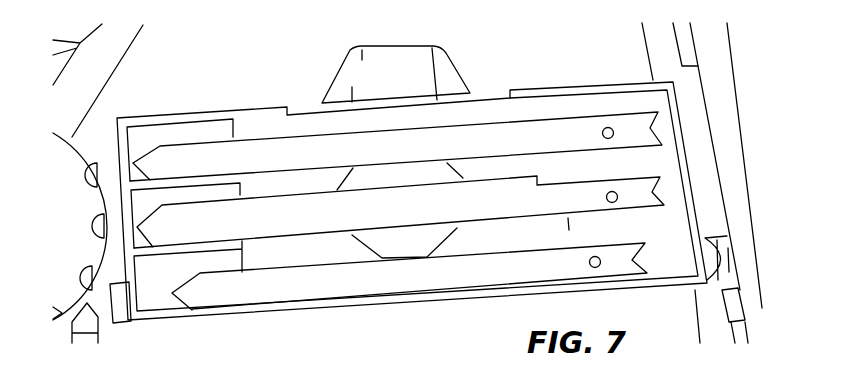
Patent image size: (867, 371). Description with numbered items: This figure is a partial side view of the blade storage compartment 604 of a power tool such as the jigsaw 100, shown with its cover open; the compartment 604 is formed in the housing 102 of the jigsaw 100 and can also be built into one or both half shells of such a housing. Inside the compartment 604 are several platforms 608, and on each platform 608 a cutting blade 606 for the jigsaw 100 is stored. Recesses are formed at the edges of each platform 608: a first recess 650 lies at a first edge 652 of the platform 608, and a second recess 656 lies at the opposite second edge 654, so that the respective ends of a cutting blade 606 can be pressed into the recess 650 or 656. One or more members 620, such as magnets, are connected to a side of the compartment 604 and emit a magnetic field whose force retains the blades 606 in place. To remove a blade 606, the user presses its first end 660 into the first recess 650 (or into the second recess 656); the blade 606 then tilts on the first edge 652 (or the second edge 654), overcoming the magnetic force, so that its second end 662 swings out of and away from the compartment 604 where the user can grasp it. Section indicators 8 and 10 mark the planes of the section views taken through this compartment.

The jigsaw 100 is at (86, 246).
The housing 102 is at (407, 183).
The blade storage compartment 604 is at (557, 78).
The cutting blades 606 is at (301, 166).
The platforms 608 is at (268, 185).
The members 620 is at (411, 172).
The first recess 650 is at (666, 192).
The first edge 652 is at (567, 185).
The second edge 654 is at (237, 187).
The second recess 656 is at (148, 202).
The first end 660 is at (638, 186).
The second end 662 is at (182, 228).
The section line 8- 8 is at (398, 143).
The section line 10- 10 is at (430, 176).